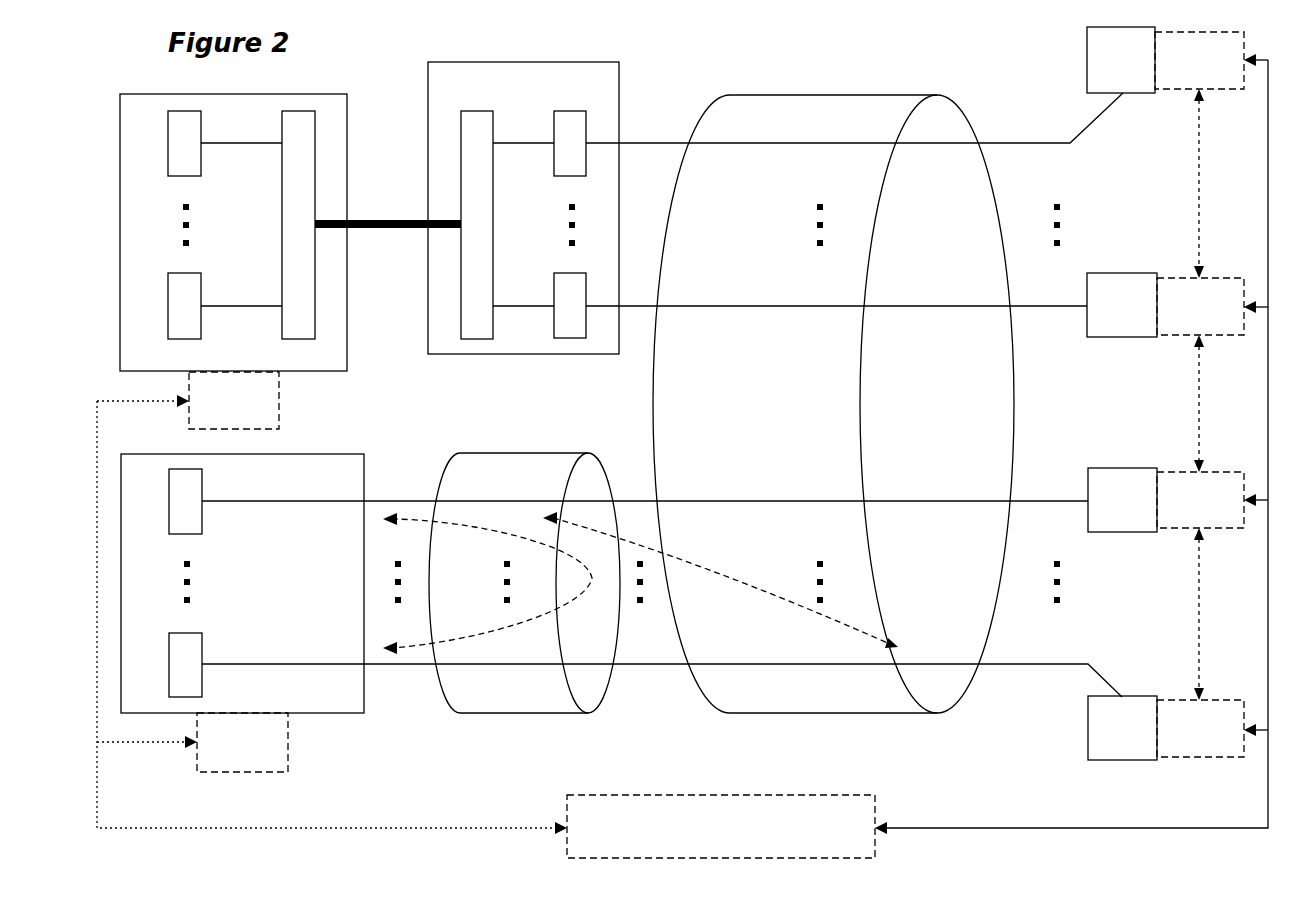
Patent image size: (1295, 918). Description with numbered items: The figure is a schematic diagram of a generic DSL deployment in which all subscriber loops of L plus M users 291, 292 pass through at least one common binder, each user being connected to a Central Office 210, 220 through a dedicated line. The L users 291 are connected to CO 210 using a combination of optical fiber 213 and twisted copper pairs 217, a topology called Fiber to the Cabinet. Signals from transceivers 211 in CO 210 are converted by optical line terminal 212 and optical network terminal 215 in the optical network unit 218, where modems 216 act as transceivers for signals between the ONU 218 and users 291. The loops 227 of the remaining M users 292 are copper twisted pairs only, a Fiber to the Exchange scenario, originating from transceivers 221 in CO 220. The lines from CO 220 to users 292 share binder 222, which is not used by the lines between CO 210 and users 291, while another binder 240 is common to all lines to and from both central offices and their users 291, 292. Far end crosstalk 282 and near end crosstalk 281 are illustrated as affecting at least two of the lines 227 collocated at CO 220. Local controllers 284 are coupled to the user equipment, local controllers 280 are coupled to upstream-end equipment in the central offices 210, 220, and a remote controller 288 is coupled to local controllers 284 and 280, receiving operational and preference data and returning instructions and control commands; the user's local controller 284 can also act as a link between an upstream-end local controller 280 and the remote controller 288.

The central office 210 is at (323, 371).
The transceivers 211 is at (186, 178).
The optical line terminal 212 is at (282, 225).
The optical fiber 213 is at (386, 229).
The optical network terminal 215 is at (494, 160).
The modems 216 is at (554, 128).
The twisted copper pairs 217 is at (1058, 141).
The optical network unit 218 is at (619, 93).
The central office 220 is at (320, 713).
The transceivers 221 is at (188, 536).
The binder 222 is at (548, 713).
The loops 227 is at (1042, 501).
The binder 240 is at (840, 713).
The local controllers 280 is at (279, 413).
The near end crosstalk 281 is at (420, 645).
The far end crosstalk 282 is at (698, 568).
The local controllers 284 is at (1218, 92).
The remote controller 288 is at (660, 795).
The users 291 is at (1087, 43).
The users 292 is at (1122, 468).